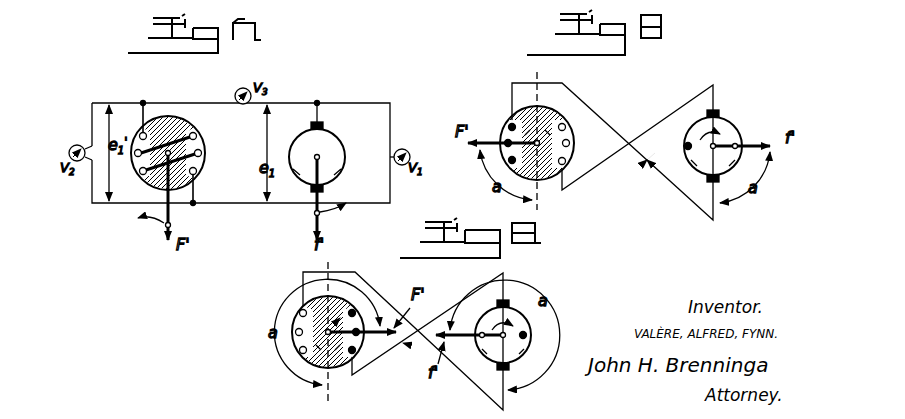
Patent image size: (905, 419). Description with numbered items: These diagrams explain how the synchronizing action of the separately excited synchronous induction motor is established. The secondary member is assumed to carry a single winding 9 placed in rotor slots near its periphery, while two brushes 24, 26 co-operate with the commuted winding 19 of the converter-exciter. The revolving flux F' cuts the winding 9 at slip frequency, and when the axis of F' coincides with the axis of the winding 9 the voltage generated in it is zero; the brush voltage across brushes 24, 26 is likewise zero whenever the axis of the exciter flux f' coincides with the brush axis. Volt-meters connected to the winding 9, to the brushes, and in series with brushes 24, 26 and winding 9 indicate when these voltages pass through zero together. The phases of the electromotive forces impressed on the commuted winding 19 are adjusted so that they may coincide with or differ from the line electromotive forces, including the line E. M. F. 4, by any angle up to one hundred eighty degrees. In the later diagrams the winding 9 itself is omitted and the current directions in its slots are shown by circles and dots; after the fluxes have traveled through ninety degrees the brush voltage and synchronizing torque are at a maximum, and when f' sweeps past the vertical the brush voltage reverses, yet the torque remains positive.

In FIG. 6, the line E. M. F. 4 is at (207, 140).
In FIG. 8, the line E. M. F. 4 is at (577, 133).
In FIG. 9, the line E. M. F. 4 is at (336, 372).
In FIG. 6, the winding 9 is at (191, 160).
In FIG. 6, the commuted winding 19 is at (346, 143).
In FIG. 8, the commuted winding 19 is at (690, 167).
In FIG. 9, the commuted winding 19 is at (526, 357).
In FIG. 6, the brush 24 is at (330, 122).
In FIG. 8, the brush 24 is at (726, 111).
In FIG. 9, the brush 24 is at (515, 301).
In FIG. 6, the brush 26 is at (307, 194).
In FIG. 8, the brush 26 is at (702, 187).
In FIG. 9, the brush 26 is at (492, 372).